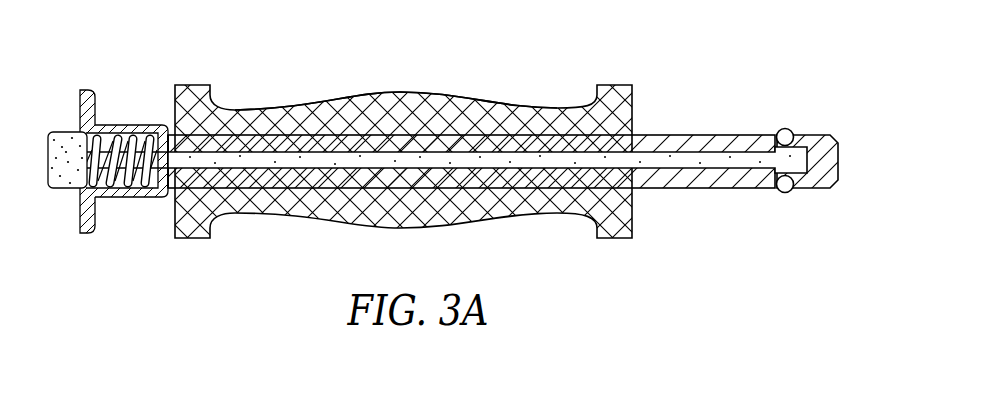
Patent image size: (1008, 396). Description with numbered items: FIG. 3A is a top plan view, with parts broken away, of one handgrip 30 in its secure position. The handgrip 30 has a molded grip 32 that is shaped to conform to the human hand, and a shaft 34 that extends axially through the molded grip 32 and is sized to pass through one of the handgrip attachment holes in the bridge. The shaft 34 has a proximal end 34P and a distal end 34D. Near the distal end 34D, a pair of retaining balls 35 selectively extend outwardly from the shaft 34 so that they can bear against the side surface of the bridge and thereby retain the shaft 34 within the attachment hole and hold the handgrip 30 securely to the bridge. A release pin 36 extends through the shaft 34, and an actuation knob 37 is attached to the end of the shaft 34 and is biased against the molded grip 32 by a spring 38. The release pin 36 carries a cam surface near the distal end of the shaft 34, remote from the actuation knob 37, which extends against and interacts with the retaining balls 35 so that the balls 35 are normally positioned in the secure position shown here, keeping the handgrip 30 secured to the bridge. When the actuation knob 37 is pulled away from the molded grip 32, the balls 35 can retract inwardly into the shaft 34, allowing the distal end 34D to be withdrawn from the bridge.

The handgrip 30 is at (332, 219).
The molded grip 32 is at (297, 105).
The shaft 34 is at (675, 133).
The proximal end 34P is at (190, 183).
The distal end 34D is at (810, 136).
The retaining balls 35 is at (786, 128).
The release pin 36 is at (677, 172).
The actuation knob 37 is at (96, 105).
The spring 38 is at (118, 140).